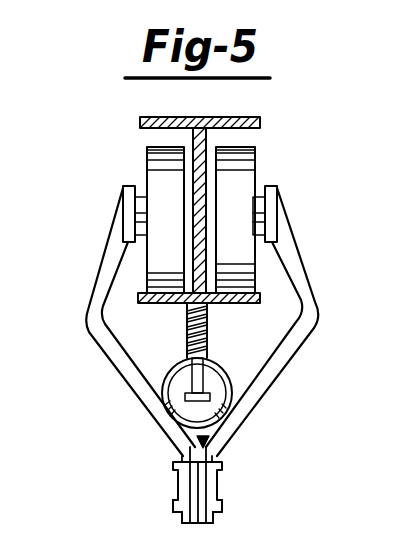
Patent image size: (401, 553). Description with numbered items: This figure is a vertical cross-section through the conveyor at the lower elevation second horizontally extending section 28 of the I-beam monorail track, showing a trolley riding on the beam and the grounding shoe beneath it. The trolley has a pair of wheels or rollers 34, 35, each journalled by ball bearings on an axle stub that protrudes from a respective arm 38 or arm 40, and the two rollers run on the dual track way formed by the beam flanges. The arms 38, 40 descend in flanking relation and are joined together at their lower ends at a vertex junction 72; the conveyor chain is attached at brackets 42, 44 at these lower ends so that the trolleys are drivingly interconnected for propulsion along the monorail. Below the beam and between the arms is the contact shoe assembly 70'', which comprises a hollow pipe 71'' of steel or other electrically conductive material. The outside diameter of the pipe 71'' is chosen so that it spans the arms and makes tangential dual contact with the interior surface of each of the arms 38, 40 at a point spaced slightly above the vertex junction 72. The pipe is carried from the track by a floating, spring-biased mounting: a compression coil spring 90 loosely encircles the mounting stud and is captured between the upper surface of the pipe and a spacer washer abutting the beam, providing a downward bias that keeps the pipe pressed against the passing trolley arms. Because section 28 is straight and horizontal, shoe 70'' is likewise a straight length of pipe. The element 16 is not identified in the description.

The second horizontally extending section 28 is at (263, 121).
The wheel or roller 35 is at (147, 152).
The wheel or roller 34 is at (257, 160).
The threaded rod 16 is at (206, 336).
The compression coil spring 90 is at (199, 316).
The hollow pipe 71'' is at (217, 379).
The arm 40 is at (115, 366).
The arm 38 is at (290, 358).
The contact shoe assembly 70'' is at (262, 429).
The vertex junction 72 is at (178, 453).
The bracket 42 is at (222, 491).
The bracket 44 is at (175, 486).